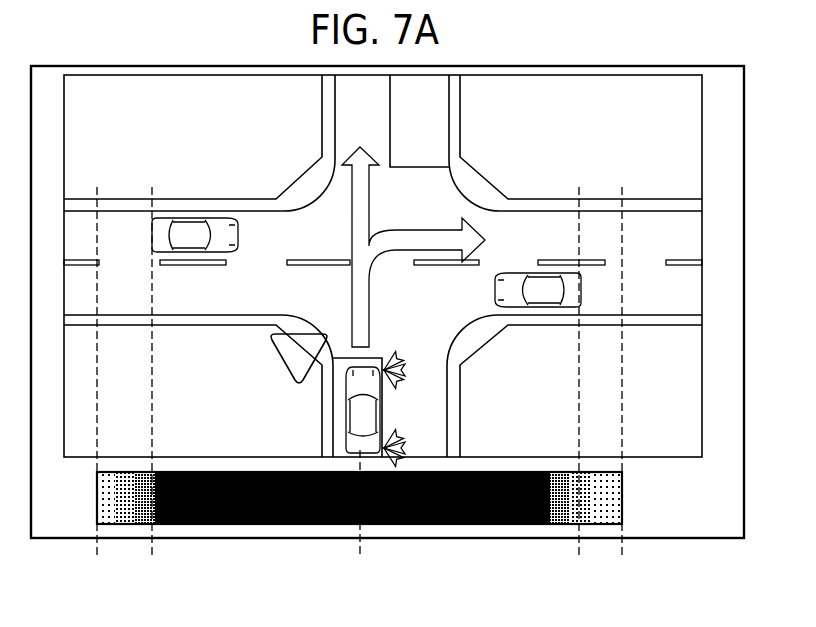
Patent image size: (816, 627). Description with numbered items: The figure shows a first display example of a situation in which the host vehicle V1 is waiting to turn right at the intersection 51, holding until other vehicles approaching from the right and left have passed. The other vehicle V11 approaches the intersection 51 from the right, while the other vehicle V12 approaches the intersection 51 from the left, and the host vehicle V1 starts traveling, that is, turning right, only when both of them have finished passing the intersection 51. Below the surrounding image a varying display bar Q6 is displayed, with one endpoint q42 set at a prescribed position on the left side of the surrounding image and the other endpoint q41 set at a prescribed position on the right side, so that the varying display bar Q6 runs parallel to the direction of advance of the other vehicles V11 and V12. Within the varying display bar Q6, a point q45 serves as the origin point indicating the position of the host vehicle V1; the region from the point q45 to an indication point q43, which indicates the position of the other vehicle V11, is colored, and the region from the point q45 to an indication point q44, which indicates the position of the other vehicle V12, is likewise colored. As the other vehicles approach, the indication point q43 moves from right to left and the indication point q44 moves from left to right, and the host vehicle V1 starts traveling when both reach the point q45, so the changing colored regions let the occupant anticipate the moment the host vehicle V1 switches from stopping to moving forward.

The intersection 51 is at (437, 199).
The host vehicle V1 is at (356, 417).
The other vehicle V11 is at (547, 285).
The other vehicle V12 is at (184, 228).
The endpoint q41 is at (632, 386).
The endpoint q42 is at (97, 386).
The indication point q43 is at (575, 386).
The indication point q44 is at (157, 386).
The point q45 is at (362, 518).
The varying display bar Q6 is at (454, 524).